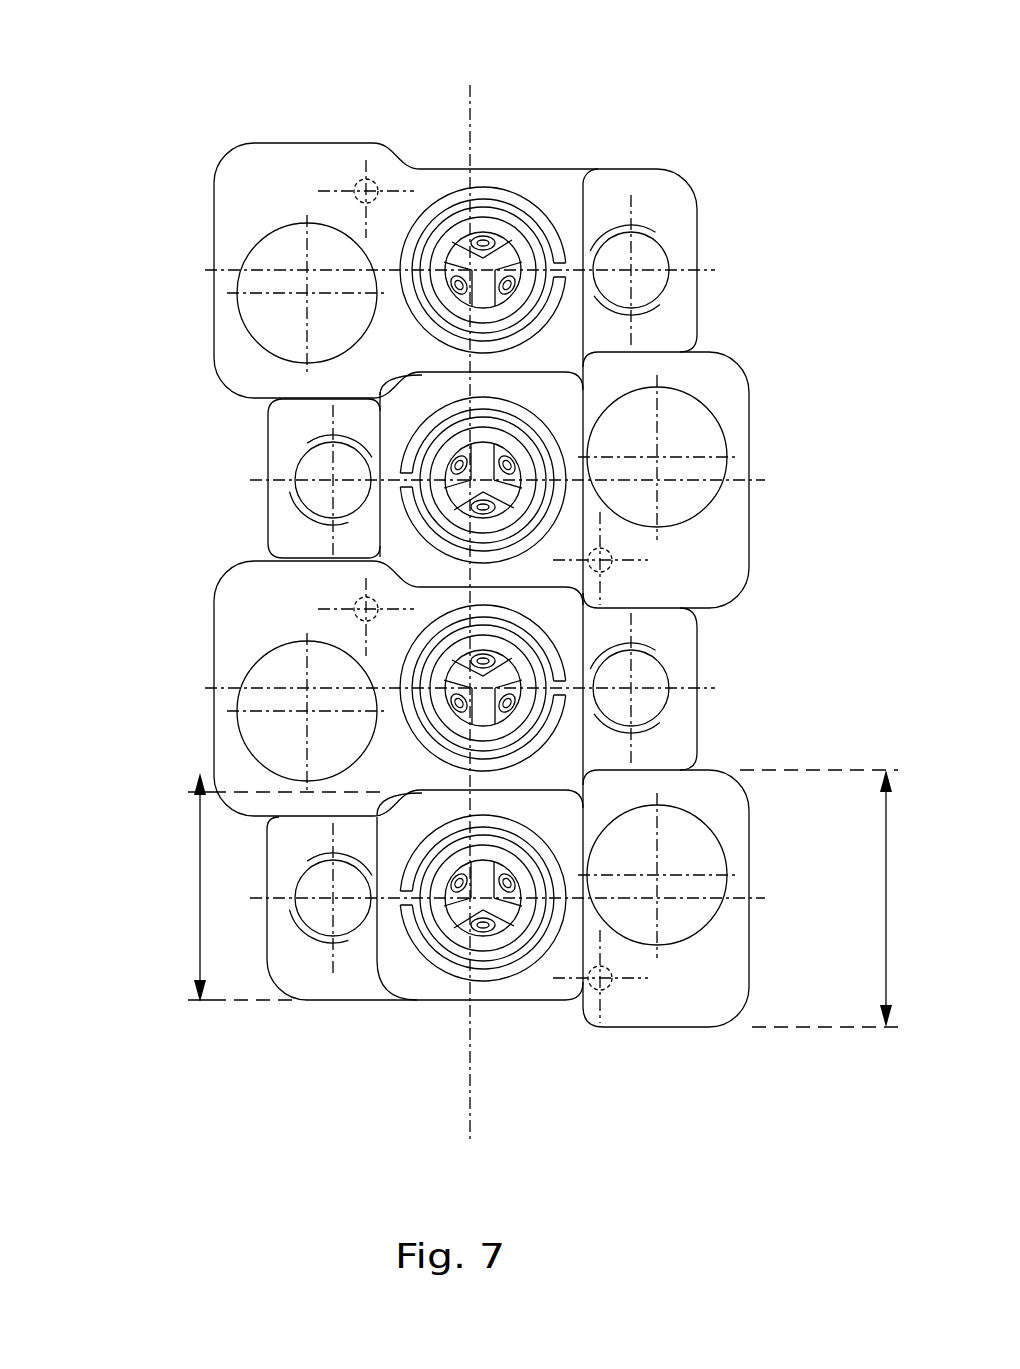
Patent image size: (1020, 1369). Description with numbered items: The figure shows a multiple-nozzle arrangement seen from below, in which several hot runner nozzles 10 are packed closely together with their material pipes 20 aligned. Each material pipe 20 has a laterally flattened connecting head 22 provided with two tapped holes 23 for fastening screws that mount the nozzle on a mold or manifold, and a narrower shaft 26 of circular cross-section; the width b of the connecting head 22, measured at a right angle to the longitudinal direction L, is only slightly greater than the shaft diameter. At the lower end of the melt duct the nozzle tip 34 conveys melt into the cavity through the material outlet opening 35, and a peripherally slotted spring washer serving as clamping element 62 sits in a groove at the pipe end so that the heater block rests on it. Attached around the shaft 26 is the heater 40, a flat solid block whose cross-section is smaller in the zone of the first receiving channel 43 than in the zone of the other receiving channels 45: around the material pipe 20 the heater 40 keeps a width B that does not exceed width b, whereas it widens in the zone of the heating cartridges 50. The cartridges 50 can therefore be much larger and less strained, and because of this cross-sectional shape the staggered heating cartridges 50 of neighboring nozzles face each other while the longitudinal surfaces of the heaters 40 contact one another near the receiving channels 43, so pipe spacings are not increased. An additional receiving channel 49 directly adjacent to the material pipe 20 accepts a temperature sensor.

The hot runner nozzle 10 is at (187, 93).
The material pipe 20 is at (622, 183).
The connecting head 22 is at (320, 994).
The tapped holes 23 is at (647, 260).
The shaft 26 is at (440, 200).
The nozzle tip 34 is at (512, 255).
The material outlet opening 35 is at (492, 230).
The heater 40 is at (306, 128).
The first receiving channel 43 is at (468, 208).
The other receiving channels 45 is at (258, 257).
The receiving channel 49 is at (362, 183).
The heating cartridges 50 is at (265, 313).
The clamping element 62 is at (543, 222).
The longitudinal direction L is at (205, 270).
The width of heater B is at (198, 877).